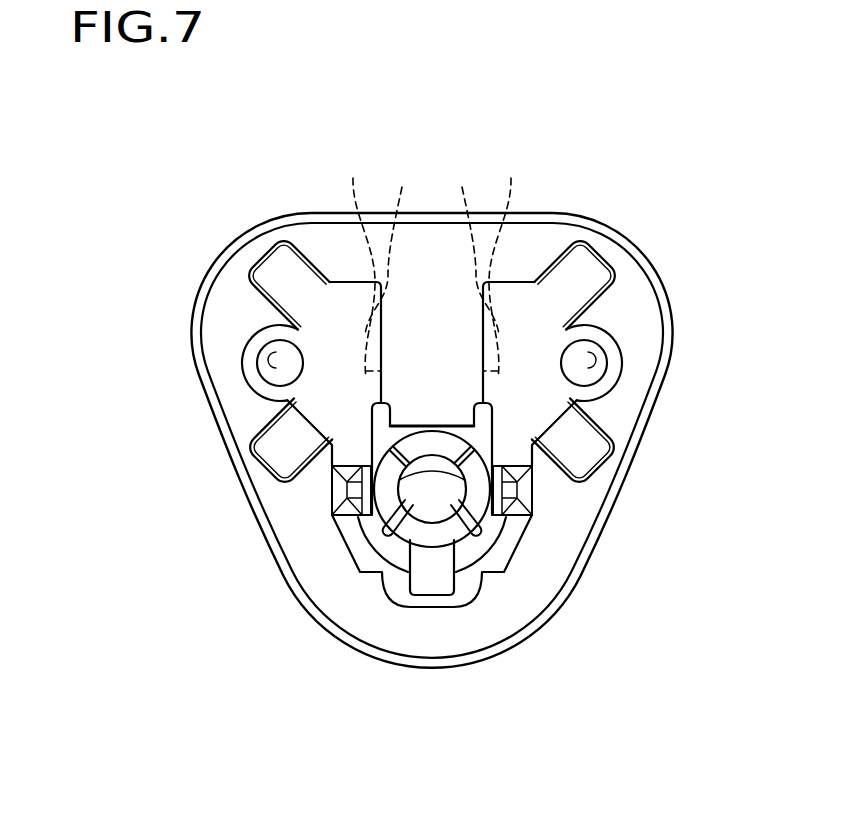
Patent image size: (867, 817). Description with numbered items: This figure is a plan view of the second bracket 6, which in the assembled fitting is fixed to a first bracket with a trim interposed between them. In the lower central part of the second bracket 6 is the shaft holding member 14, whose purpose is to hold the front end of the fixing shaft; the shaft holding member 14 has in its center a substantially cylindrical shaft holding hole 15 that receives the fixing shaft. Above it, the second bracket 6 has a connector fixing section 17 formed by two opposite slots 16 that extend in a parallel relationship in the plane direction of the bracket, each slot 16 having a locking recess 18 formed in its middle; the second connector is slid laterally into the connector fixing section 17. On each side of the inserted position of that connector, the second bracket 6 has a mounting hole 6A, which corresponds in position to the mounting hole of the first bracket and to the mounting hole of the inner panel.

The second bracket 6 is at (656, 244).
The mounting hole 6A is at (274, 363).
The shaft holding member 14 is at (398, 553).
The shaft holding hole 15 is at (426, 477).
The slot 16 is at (437, 260).
The connector fixing section 17 is at (430, 300).
The locking recess 18 is at (432, 244).